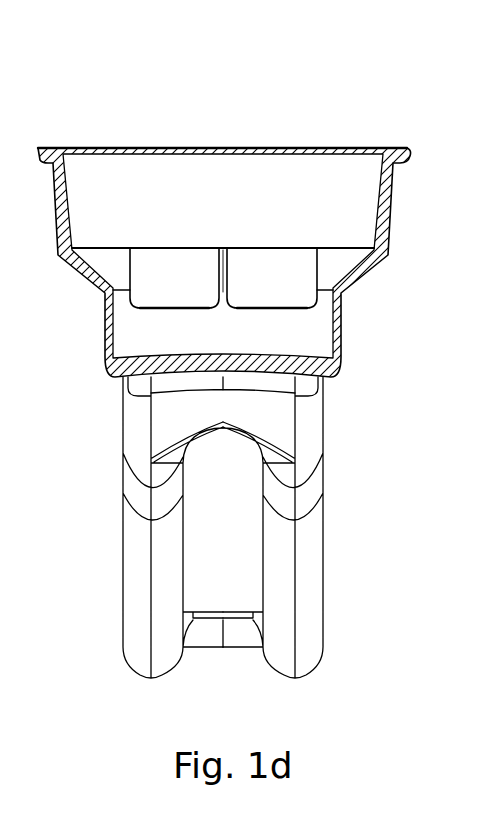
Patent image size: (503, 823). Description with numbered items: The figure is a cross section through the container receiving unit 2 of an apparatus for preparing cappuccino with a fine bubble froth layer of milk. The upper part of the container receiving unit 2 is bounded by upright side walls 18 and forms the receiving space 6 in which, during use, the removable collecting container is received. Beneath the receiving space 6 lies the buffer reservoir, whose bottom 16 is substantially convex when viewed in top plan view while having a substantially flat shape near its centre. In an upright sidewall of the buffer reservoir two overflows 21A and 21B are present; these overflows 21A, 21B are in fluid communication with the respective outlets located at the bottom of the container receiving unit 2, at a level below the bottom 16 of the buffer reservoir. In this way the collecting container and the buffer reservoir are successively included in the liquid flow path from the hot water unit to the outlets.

The container receiving unit 2 is at (251, 350).
The receiving space 6 is at (343, 192).
The bottom 16 is at (249, 355).
The upright side walls 18 is at (390, 207).
The overflow 21A is at (165, 272).
The overflow 21B is at (280, 272).